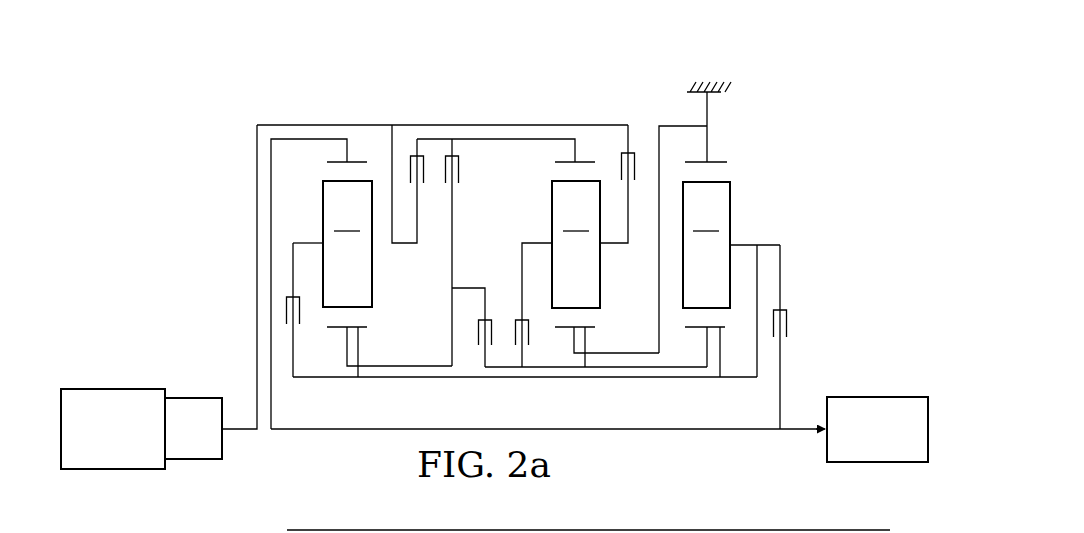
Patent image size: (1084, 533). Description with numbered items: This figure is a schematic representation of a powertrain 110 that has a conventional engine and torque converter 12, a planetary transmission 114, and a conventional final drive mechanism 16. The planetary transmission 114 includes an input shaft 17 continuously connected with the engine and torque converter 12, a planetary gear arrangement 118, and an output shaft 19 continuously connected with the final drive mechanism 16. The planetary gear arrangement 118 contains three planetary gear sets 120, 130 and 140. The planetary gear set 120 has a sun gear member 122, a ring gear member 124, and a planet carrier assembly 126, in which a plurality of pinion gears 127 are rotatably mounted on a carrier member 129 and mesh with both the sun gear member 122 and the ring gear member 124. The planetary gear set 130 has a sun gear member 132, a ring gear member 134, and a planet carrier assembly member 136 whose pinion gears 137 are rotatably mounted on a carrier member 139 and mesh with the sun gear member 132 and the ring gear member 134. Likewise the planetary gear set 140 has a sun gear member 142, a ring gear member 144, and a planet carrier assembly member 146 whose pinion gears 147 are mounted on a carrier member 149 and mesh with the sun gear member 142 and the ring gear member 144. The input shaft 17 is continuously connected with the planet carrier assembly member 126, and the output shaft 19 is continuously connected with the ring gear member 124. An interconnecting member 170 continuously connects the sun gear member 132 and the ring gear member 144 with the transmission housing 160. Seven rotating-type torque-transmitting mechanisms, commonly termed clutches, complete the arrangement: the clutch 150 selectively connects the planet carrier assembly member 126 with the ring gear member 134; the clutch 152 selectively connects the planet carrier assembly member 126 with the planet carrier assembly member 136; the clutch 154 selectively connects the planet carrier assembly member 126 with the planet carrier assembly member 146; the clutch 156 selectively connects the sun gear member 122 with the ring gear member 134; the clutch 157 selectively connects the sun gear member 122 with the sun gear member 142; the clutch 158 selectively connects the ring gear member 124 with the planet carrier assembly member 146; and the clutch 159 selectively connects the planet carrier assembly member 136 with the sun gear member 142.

The engine and torque converter 12 is at (131, 370).
The final drive mechanism 16 is at (862, 381).
The input shaft 17 is at (243, 432).
The output shaft 19 is at (790, 432).
The powertrain 110 is at (160, 151).
The planetary transmission 114 is at (462, 103).
The planetary gear arrangement 118 is at (525, 103).
The planetary gear set 120 is at (334, 331).
The sun gear member 122 is at (358, 331).
The ring gear member 124 is at (337, 160).
The planet carrier assembly 126 is at (311, 236).
The pinion gears 127 is at (347, 244).
The carrier member 129 is at (306, 242).
The planetary gear set 130 is at (564, 332).
The sun gear member 132 is at (586, 332).
The ring gear member 134 is at (567, 160).
The planet carrier assembly member 136 is at (550, 237).
The pinion gears 137 is at (576, 244).
The carrier member 139 is at (537, 242).
The planetary gear set 140 is at (699, 332).
The sun gear member 142 is at (720, 332).
The ring gear member 144 is at (714, 158).
The planet carrier assembly member 146 is at (739, 235).
The pinion gears 147 is at (706, 245).
The carrier member 149 is at (752, 243).
The clutch 150 is at (407, 148).
The clutch 152 is at (617, 148).
The clutch 154 is at (279, 288).
The clutch 156 is at (445, 148).
The clutch 157 is at (472, 343).
The clutch 158 is at (797, 308).
The clutch 159 is at (510, 343).
The transmission housing 160 is at (688, 85).
The interconnecting member 170 is at (656, 307).